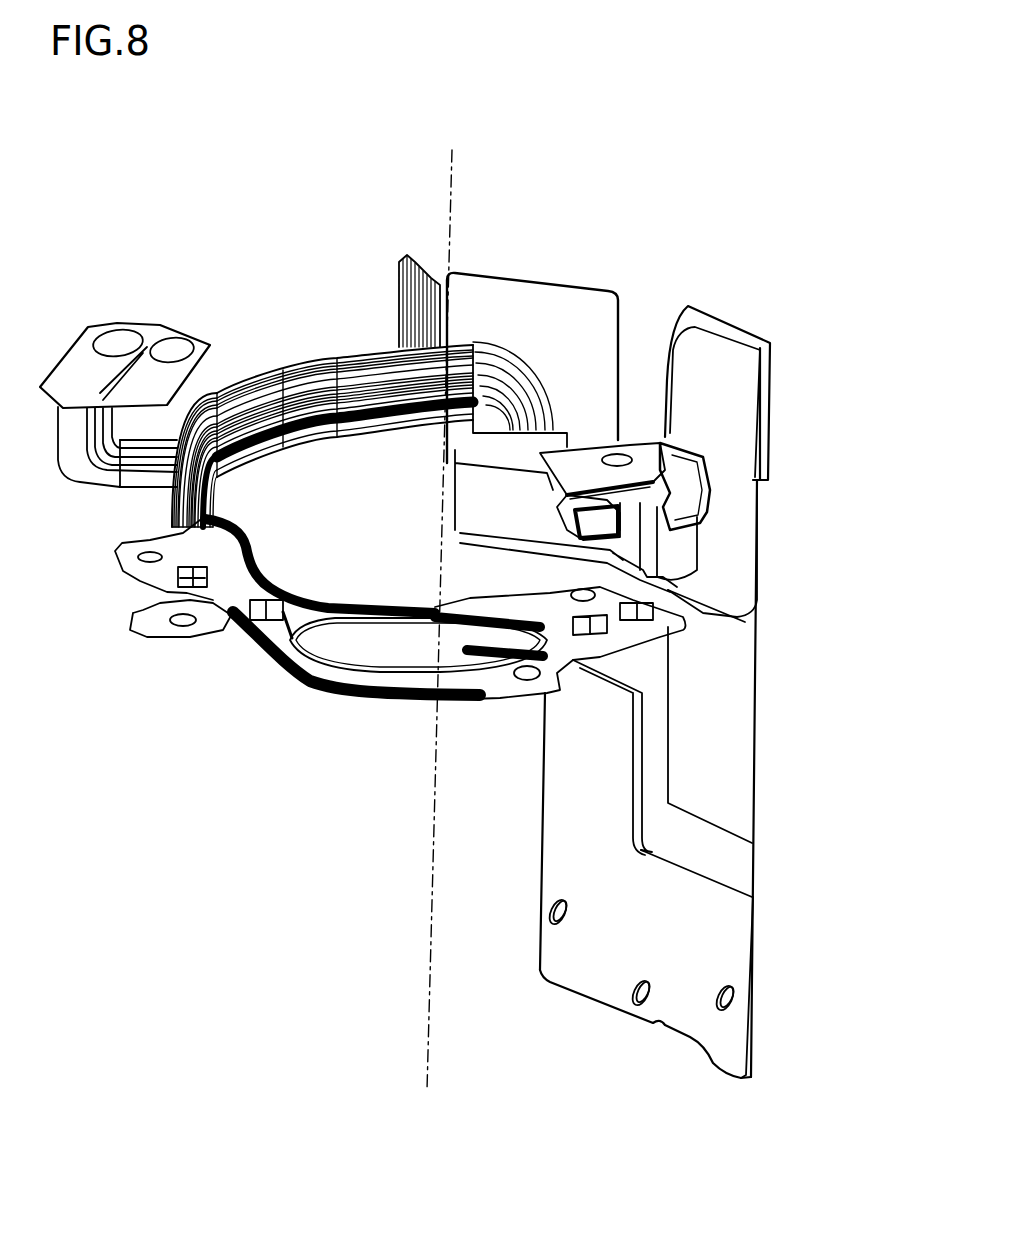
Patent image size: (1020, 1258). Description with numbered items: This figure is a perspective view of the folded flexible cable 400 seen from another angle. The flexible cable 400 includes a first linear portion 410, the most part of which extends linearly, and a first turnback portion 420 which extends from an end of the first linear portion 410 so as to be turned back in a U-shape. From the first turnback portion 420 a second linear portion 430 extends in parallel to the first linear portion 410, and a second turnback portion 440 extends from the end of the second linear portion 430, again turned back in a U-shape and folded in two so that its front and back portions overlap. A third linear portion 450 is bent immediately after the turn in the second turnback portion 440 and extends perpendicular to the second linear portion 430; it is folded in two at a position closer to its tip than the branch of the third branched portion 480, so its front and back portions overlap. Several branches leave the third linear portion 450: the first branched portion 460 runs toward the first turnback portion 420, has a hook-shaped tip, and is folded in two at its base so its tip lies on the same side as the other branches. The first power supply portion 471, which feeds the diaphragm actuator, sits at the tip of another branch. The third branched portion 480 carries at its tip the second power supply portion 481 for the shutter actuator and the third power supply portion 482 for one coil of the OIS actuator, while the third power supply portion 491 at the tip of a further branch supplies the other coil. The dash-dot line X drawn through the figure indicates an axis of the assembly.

The flexible cable 400 is at (609, 118).
The first linear portion 410 is at (592, 817).
The first turnback portion 420 is at (602, 963).
The second linear portion 430 is at (725, 773).
The second turnback portion 440 is at (721, 357).
The third linear portion 450 is at (727, 583).
The first branched portion 460 is at (527, 308).
The first power supply portion 471 is at (420, 257).
The third branched portion 480 is at (258, 388).
The second power supply portion 481 is at (70, 365).
The third power supply portion 482 is at (493, 673).
The third power supply portion 491 is at (693, 510).
The axis X is at (430, 930).